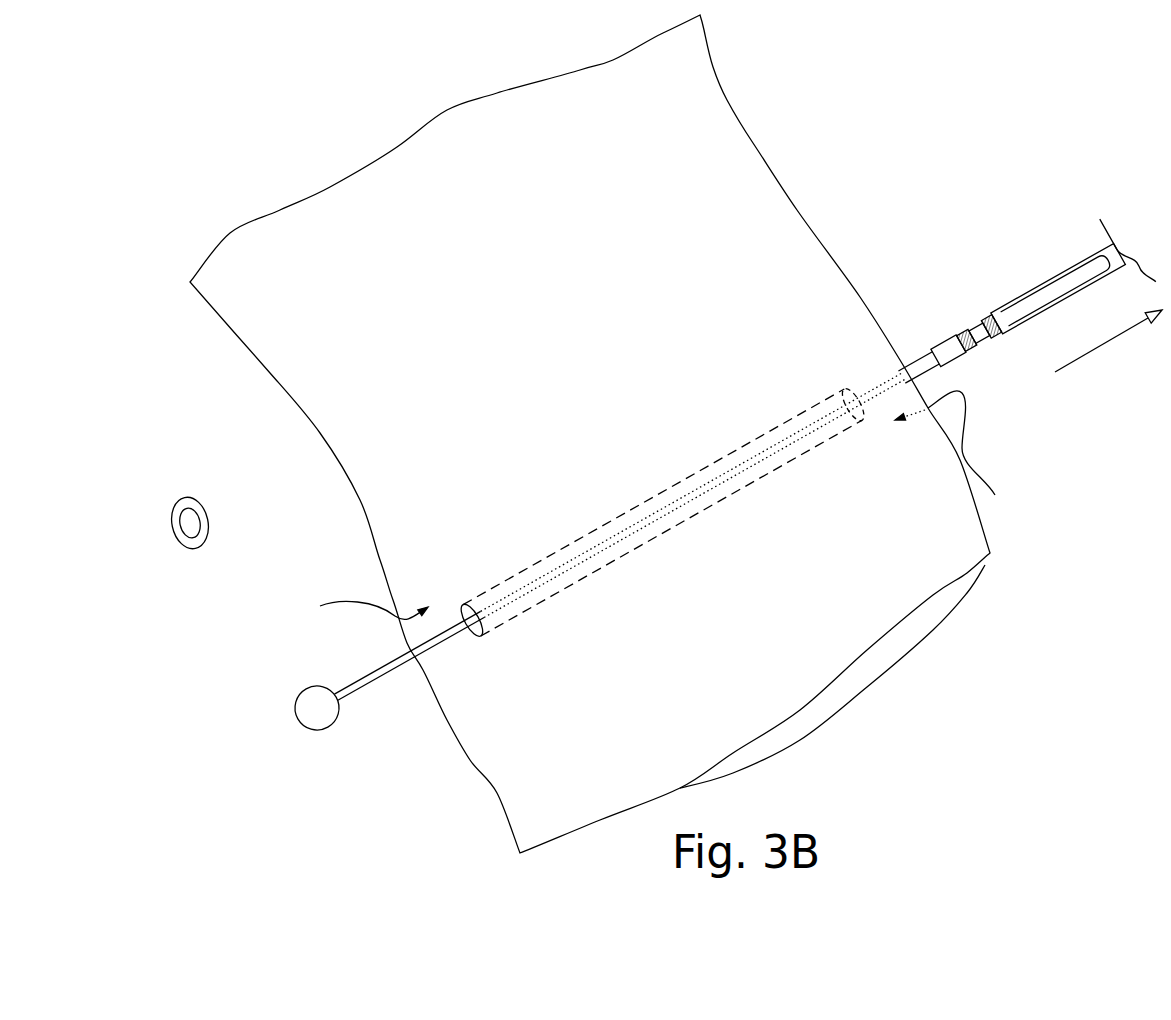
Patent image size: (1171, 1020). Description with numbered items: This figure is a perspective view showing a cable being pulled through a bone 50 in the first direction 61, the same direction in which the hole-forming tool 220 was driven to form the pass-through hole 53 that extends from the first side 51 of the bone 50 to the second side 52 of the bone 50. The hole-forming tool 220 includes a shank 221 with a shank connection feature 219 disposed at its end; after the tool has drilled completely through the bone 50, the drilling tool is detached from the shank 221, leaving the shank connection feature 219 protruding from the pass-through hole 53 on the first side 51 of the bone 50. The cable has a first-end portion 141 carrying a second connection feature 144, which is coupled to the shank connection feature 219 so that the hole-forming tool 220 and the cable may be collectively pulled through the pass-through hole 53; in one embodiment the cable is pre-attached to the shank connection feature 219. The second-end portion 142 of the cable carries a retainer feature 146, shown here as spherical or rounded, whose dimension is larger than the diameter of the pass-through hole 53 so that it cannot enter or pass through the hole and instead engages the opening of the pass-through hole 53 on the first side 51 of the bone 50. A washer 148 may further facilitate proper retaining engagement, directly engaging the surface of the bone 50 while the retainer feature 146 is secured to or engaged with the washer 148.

The bone 50 is at (728, 105).
The first side 51 is at (358, 613).
The second side 52 is at (960, 457).
The pass-through hole 53 is at (497, 632).
The first direction 61 is at (1112, 340).
The first-end portion 141 is at (905, 329).
The second-end portion 142 is at (370, 713).
The second connection feature 144 is at (947, 355).
The retainer feature 146 is at (298, 722).
The washer 148 is at (203, 537).
The shank connection feature 219 is at (958, 335).
The hole-forming tool 220 is at (1065, 173).
The shank 221 is at (1037, 290).